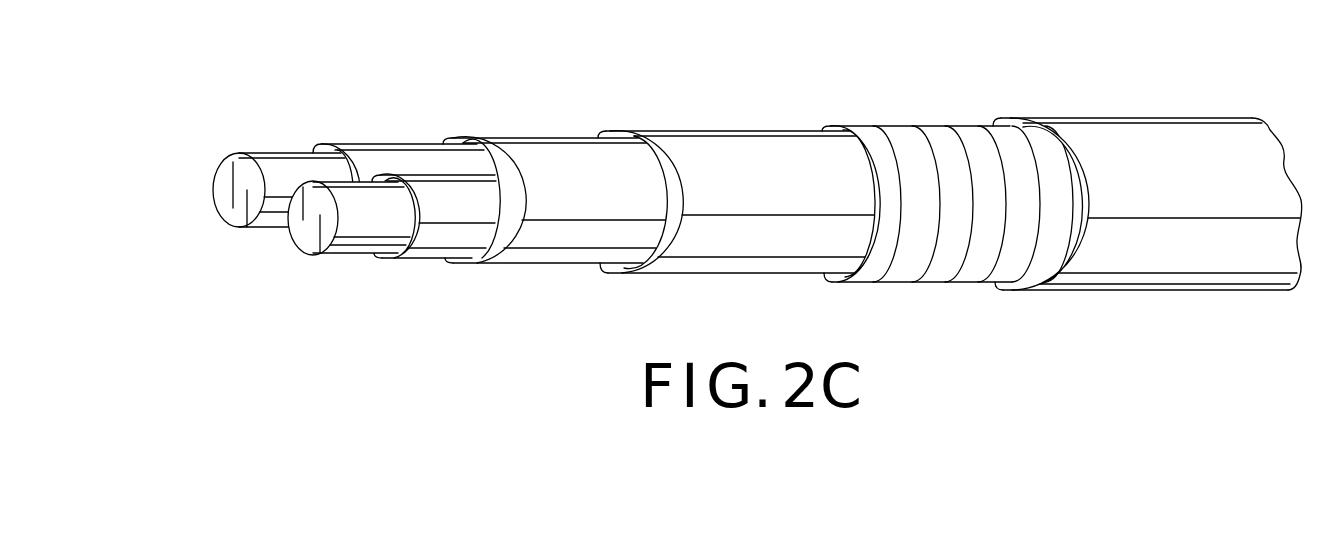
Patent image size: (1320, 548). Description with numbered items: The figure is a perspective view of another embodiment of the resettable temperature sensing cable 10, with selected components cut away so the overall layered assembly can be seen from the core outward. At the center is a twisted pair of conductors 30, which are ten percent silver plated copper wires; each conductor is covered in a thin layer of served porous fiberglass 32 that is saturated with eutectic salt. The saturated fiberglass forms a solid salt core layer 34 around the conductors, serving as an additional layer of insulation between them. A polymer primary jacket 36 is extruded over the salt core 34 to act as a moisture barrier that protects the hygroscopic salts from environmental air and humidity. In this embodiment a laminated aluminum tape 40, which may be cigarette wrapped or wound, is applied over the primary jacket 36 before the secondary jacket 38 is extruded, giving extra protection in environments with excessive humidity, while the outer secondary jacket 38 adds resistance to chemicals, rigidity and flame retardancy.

The temperature sensing cable 10 is at (743, 185).
The conductors 30 is at (260, 139).
The fiberglass 32 is at (437, 255).
The salt core layer 34 is at (558, 149).
The primary jacket 36 is at (736, 151).
The secondary jacket 38 is at (1152, 144).
The laminated aluminum tape 40 is at (930, 123).